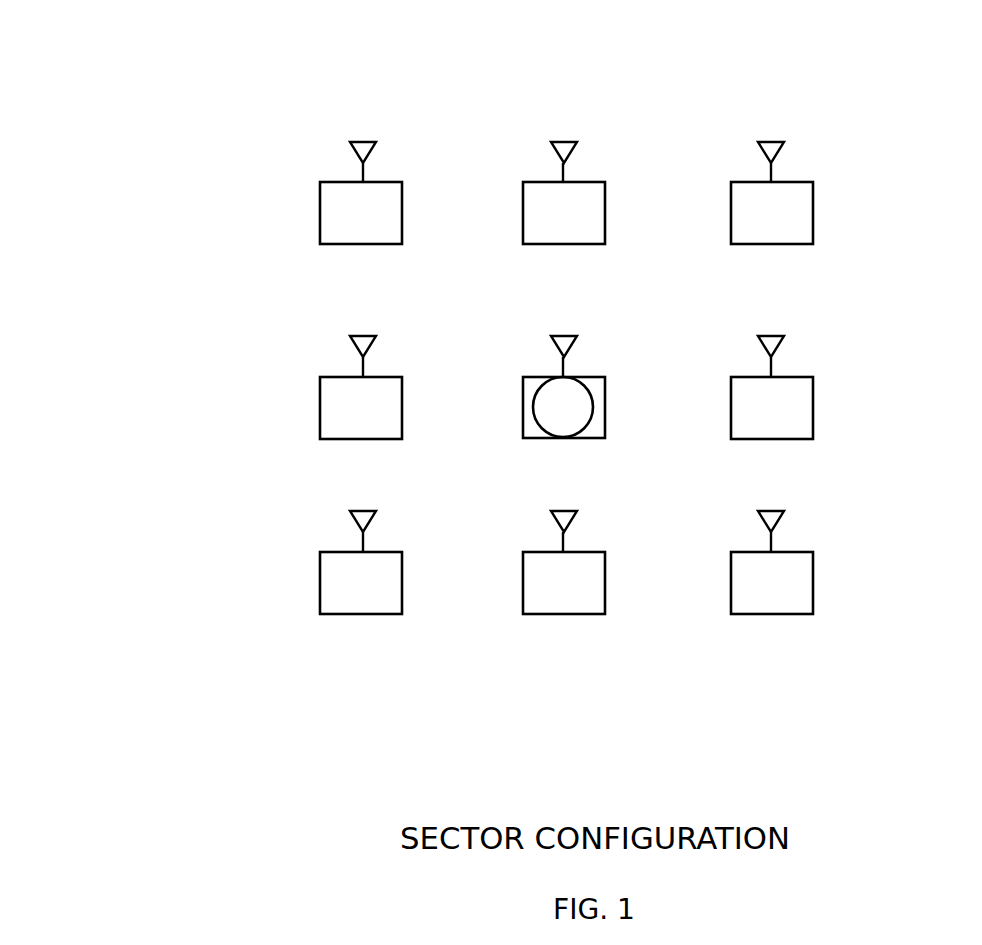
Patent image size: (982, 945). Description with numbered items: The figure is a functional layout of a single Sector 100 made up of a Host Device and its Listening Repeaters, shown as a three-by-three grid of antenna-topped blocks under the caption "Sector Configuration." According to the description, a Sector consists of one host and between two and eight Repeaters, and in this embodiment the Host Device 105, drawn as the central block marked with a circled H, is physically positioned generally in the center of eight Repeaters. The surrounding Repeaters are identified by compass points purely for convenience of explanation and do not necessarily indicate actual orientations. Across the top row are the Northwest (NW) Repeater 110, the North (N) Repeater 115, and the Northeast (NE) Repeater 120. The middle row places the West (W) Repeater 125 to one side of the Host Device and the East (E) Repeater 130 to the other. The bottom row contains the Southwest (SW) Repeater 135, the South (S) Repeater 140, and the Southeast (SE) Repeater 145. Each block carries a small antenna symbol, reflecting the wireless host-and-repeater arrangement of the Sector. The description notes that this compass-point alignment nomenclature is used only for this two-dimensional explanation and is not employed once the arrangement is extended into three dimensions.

The Sector 100 is at (12, 38).
The Host Device 105 is at (593, 375).
The Northwest (NW) Repeater 110 is at (320, 190).
The North (N) Repeater 115 is at (585, 182).
The Northeast (NE) Repeater 120 is at (813, 188).
The West (W) Repeater 125 is at (320, 384).
The East (E) Repeater 130 is at (813, 390).
The Southwest (SW) Repeater 135 is at (320, 559).
The South (S) Repeater 140 is at (588, 552).
The Southeast (SE) Repeater 145 is at (812, 558).